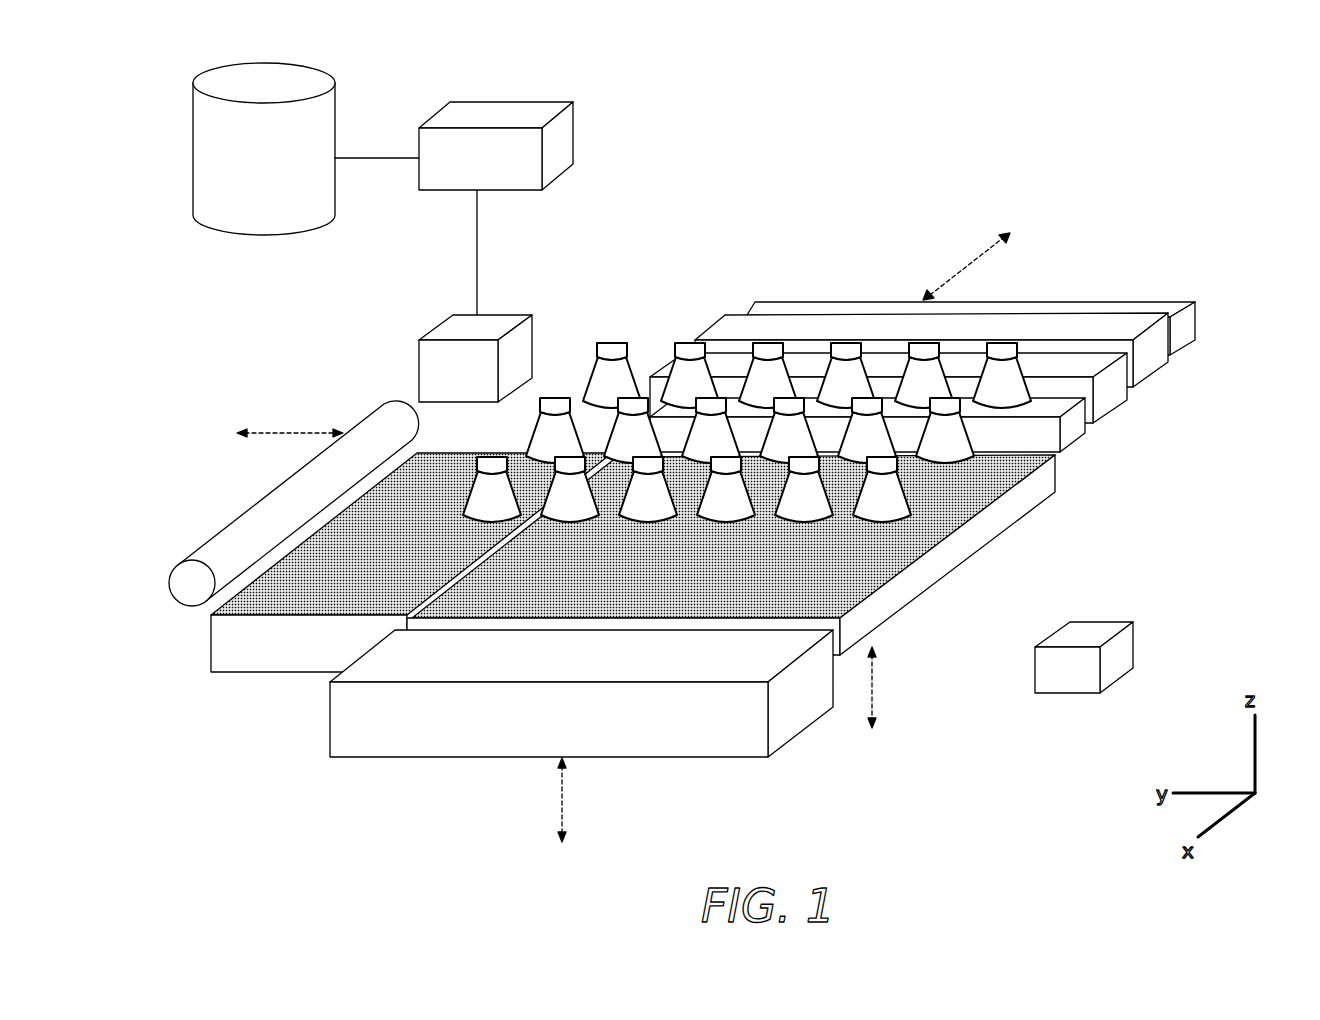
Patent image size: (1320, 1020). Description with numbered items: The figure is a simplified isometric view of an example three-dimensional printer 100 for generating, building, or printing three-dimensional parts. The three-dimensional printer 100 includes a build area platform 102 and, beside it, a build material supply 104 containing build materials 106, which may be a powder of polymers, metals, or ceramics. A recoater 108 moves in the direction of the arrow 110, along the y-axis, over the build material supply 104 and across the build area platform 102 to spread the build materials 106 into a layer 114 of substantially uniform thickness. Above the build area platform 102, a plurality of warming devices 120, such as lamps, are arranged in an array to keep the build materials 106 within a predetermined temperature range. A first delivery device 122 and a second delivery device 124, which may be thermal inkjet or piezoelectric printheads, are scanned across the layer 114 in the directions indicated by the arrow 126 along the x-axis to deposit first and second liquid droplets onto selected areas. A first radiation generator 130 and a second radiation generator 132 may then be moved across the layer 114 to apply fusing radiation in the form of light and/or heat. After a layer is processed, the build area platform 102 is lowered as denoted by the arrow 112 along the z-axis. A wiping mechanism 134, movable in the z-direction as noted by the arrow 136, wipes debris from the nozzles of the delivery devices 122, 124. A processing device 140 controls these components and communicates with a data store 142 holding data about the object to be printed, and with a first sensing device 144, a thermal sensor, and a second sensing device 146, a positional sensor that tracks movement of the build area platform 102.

The three-dimensional printer 100 is at (788, 112).
The build area platform 102 is at (897, 616).
The build material supply 104 is at (267, 671).
The build materials 106 is at (247, 606).
The recoater 108 is at (222, 527).
The arrow 110 is at (273, 433).
The arrow 112 is at (878, 683).
The layer 114 is at (940, 523).
The warming devices 120 is at (612, 343).
The first delivery device 122 is at (1112, 407).
The second delivery device 124 is at (1157, 377).
The arrow 126 is at (963, 268).
The first radiation generator 130 is at (1077, 440).
The second radiation generator 132 is at (1155, 300).
The wiping mechanism 134 is at (388, 758).
The arrow 136 is at (562, 793).
The processing device 140 is at (519, 102).
The data store 142 is at (286, 175).
The first sensing device 144 is at (497, 315).
The second sensing device 146 is at (1120, 622).